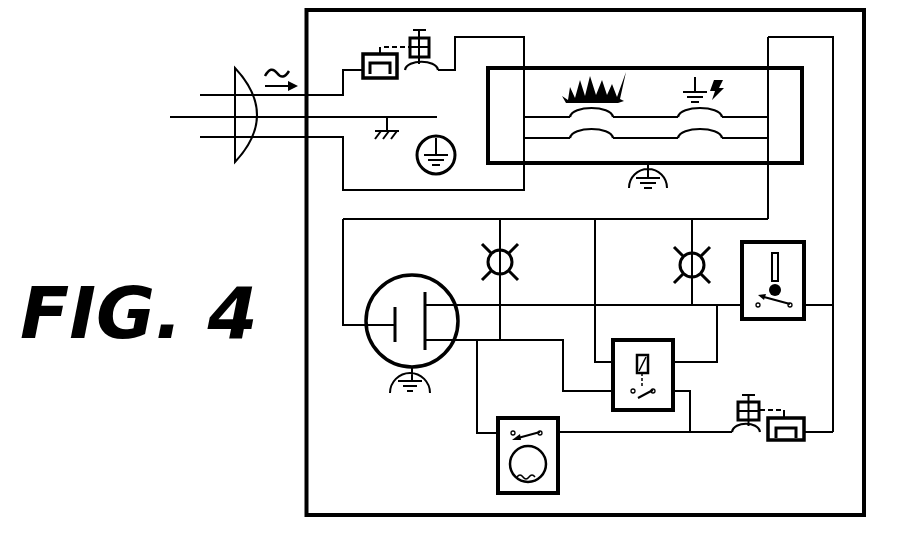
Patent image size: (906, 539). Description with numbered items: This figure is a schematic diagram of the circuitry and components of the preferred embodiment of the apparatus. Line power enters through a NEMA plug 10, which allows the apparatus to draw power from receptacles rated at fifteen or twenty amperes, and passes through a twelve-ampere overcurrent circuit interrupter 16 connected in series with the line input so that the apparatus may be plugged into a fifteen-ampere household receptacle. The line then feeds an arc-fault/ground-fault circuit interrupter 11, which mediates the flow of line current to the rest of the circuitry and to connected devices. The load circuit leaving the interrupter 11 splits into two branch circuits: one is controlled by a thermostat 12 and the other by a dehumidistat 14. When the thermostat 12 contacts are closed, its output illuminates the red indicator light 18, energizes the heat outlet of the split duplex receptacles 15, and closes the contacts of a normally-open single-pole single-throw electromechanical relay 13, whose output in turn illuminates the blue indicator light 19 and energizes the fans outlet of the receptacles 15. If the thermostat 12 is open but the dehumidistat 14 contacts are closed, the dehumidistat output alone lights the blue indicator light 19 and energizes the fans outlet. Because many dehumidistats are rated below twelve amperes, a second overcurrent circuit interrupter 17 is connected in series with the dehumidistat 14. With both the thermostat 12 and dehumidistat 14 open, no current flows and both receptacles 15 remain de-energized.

The NEMA 5-15P plug 10 is at (246, 67).
The arc-fault/ground-fault circuit interrupter 11 is at (668, 67).
The thermostat 12 is at (790, 242).
The electromechanical relay 13 is at (640, 340).
The dehumidistat 14 is at (558, 463).
The split duplex receptacles 15 is at (373, 349).
The 12-ampere overcurrent circuit interrupter 16 is at (369, 53).
The second overcurrent circuit interrupter 17 is at (792, 418).
The red indicator light 18 is at (676, 263).
The blue indicator light 19 is at (515, 260).